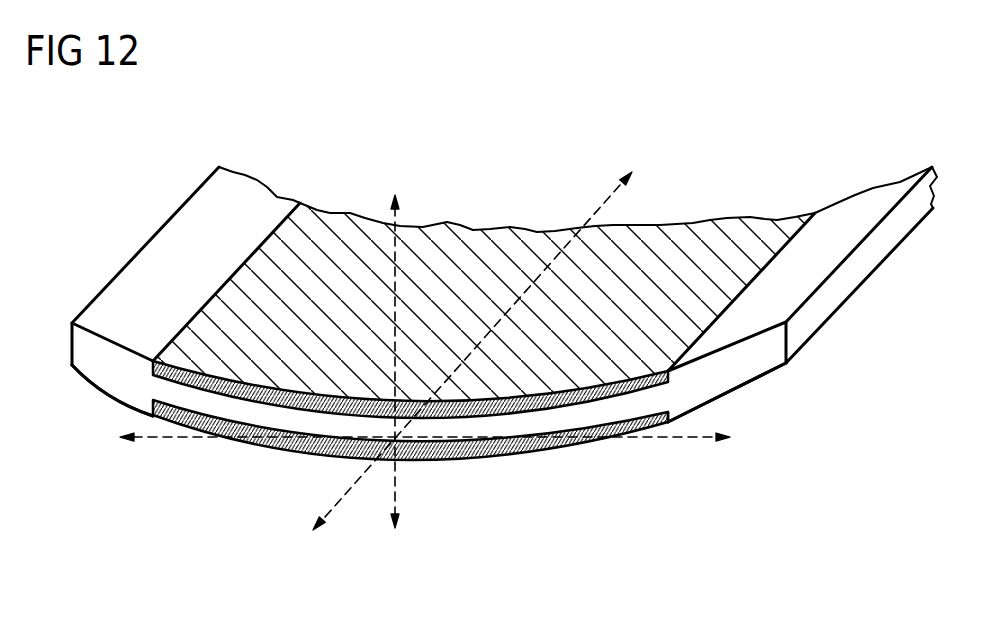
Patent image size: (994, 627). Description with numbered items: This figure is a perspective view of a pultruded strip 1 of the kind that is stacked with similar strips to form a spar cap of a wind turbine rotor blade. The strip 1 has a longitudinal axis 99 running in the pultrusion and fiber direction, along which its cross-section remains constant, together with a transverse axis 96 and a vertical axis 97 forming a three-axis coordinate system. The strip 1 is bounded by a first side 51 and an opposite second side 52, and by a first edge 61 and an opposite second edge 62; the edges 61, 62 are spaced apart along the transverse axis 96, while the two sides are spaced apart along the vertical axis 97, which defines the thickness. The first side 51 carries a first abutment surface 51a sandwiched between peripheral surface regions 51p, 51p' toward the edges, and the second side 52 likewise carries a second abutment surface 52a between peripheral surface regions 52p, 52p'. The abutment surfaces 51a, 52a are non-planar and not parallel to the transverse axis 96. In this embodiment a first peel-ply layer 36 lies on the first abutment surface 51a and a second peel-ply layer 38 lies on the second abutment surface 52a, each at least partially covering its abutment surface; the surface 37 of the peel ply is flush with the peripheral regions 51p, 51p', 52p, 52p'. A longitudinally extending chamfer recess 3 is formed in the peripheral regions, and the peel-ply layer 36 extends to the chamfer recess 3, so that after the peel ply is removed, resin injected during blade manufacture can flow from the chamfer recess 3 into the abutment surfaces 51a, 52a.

The strip 1 is at (156, 190).
The chamfer recess 3 is at (90, 397).
The first peel-ply layer 36 is at (152, 366).
The surface of the peel ply layer 37 is at (311, 252).
The second peel-ply layer 38 is at (275, 450).
The first side 51 is at (750, 173).
The first abutment surface 51a is at (583, 407).
The peripheral surface region 51p is at (145, 264).
The peripheral surface region 51p' is at (800, 257).
The second side 52 is at (510, 461).
The second abutment surface 52a is at (650, 406).
The peripheral surface region 52p is at (112, 431).
The peripheral surface region 52p' is at (729, 426).
The first edge 61 is at (70, 345).
The second edge 62 is at (855, 280).
The transverse axis 96 is at (661, 440).
The vertical axis 97 is at (398, 492).
The longitudinal axis 99 is at (341, 499).